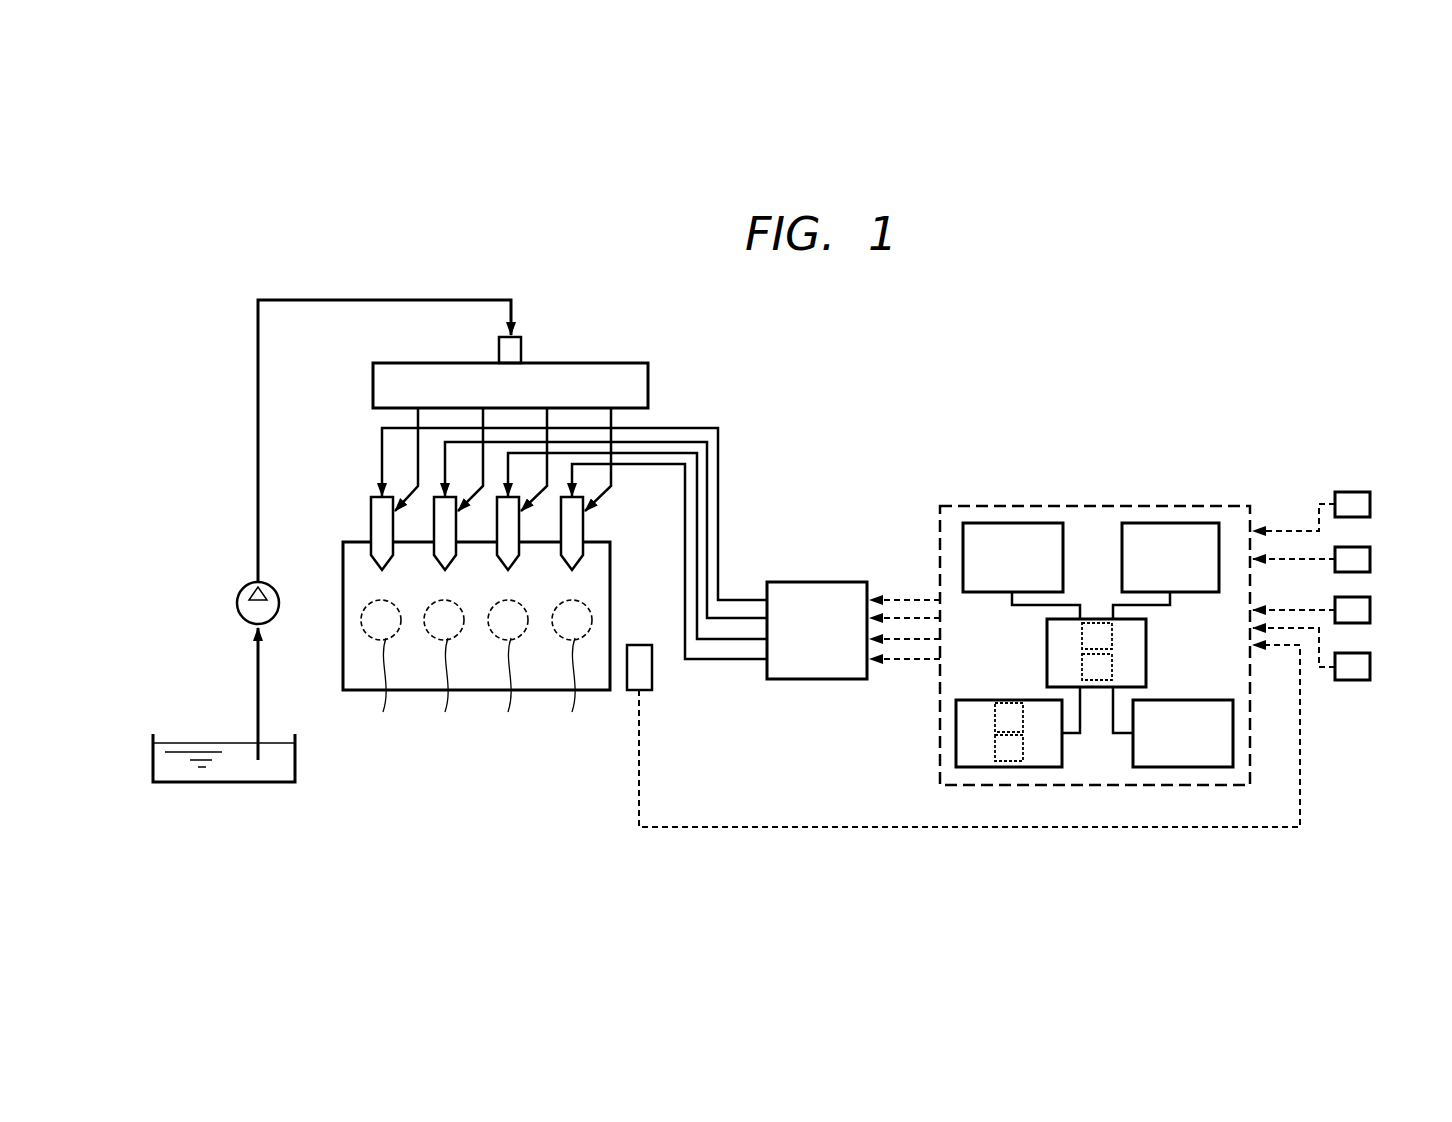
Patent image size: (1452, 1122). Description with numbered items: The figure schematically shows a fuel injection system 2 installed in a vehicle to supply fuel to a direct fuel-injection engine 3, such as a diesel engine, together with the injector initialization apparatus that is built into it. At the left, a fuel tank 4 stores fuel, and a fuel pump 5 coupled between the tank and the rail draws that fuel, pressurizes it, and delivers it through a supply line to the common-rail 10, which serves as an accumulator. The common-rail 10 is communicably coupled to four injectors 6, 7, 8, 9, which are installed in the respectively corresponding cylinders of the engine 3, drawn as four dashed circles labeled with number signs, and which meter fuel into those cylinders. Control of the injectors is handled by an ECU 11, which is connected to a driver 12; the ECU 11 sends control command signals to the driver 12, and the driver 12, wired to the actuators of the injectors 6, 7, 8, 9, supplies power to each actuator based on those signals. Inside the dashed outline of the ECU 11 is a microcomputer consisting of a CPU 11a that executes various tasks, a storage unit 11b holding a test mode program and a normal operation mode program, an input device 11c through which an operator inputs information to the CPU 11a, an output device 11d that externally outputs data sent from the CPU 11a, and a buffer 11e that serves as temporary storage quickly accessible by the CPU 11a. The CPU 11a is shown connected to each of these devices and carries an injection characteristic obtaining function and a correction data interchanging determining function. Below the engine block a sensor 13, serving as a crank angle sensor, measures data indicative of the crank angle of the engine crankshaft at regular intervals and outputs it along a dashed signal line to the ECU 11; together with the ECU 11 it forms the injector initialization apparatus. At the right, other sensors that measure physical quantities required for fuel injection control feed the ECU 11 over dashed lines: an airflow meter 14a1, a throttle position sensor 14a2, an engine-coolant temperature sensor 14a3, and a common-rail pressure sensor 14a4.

The fuel injection system 2 is at (238, 325).
The direct fuel-injection engine 3 is at (343, 663).
The fuel tank 4 is at (234, 771).
The fuel pump 5 is at (237, 598).
The injector 6 is at (371, 510).
The injector 7 is at (452, 527).
The injector 8 is at (515, 527).
The injector 9 is at (583, 526).
The common-rail 10 is at (648, 375).
The ECU 11 is at (1213, 504).
The CPU 11a is at (1047, 648).
The storage unit 11b is at (956, 741).
The input device 11c is at (1148, 523).
The output device 11d is at (1200, 700).
The buffer 11e is at (1012, 523).
The driver 12 is at (820, 582).
The sensor 13 is at (652, 672).
The airflow meter 14a1 is at (1370, 503).
The throttle position sensor 14a2 is at (1370, 558).
The engine-coolant temperature sensor 14a3 is at (1370, 609).
The common-rail pressure sensor 14a4 is at (1370, 666).